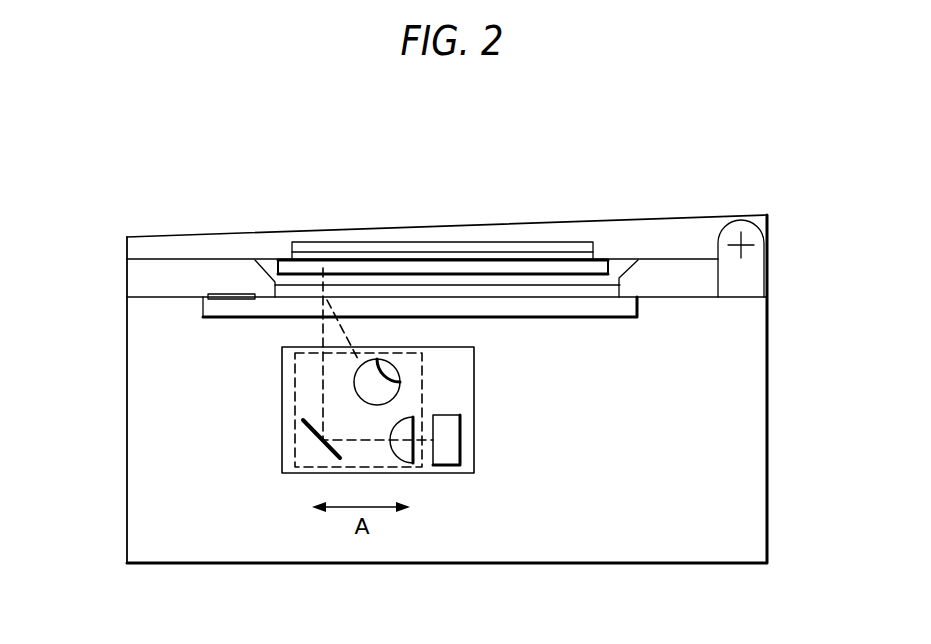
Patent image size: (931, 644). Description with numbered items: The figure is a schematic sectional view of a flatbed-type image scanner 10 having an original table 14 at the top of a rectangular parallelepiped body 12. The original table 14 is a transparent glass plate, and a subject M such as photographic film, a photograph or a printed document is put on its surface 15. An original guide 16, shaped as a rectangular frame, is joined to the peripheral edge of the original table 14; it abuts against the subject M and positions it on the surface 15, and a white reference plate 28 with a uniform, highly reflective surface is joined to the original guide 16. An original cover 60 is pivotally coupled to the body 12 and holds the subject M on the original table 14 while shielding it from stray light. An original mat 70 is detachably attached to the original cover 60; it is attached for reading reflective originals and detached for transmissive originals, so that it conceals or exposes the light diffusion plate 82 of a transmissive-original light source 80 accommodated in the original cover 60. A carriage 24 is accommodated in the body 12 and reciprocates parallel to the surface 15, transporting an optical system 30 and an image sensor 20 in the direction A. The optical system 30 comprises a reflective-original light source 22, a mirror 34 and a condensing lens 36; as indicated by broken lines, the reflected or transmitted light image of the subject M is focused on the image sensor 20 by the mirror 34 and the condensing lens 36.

The image scanner 10 is at (192, 150).
The body 12 is at (767, 465).
The original table 14 is at (623, 306).
The surface 15 is at (508, 297).
The original guide 16 is at (658, 270).
The image sensor 20 is at (448, 452).
The reflective-original light source 22 is at (378, 368).
The carriage 24 is at (297, 473).
The white reference plate 28 is at (231, 294).
The optical system 30 is at (295, 412).
The mirror 34 is at (322, 438).
The condensing lens 36 is at (405, 452).
The original cover 60 is at (262, 233).
The original mat 70 is at (373, 268).
The transmissive-original light source 80 is at (490, 236).
The light diffusion plate 82 is at (335, 248).
The subject M is at (558, 285).